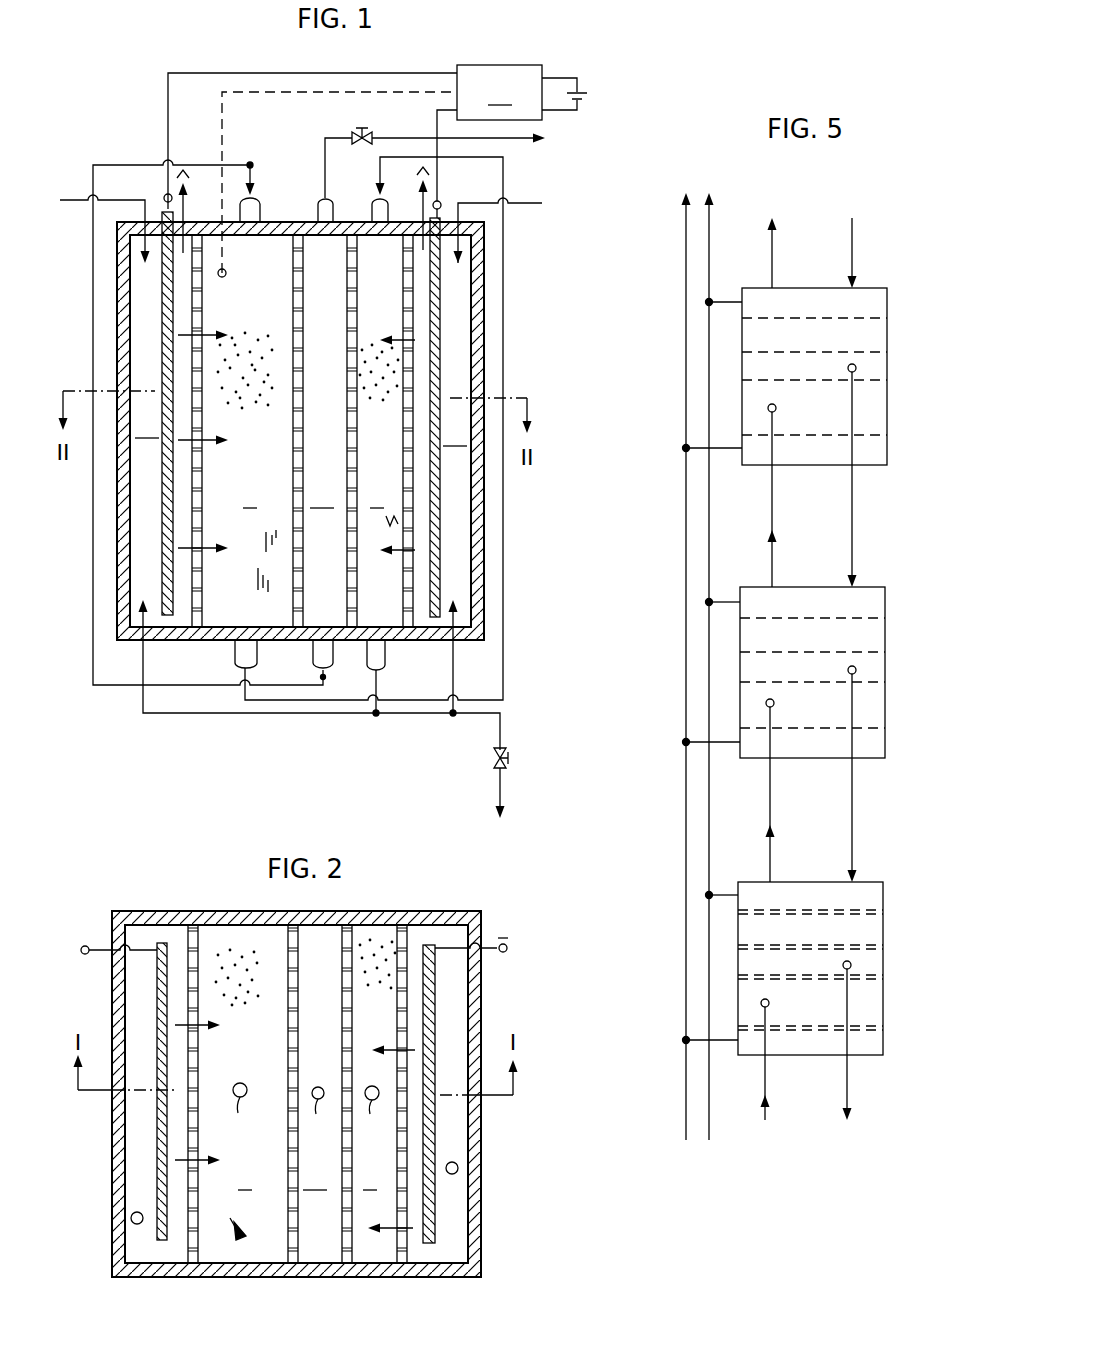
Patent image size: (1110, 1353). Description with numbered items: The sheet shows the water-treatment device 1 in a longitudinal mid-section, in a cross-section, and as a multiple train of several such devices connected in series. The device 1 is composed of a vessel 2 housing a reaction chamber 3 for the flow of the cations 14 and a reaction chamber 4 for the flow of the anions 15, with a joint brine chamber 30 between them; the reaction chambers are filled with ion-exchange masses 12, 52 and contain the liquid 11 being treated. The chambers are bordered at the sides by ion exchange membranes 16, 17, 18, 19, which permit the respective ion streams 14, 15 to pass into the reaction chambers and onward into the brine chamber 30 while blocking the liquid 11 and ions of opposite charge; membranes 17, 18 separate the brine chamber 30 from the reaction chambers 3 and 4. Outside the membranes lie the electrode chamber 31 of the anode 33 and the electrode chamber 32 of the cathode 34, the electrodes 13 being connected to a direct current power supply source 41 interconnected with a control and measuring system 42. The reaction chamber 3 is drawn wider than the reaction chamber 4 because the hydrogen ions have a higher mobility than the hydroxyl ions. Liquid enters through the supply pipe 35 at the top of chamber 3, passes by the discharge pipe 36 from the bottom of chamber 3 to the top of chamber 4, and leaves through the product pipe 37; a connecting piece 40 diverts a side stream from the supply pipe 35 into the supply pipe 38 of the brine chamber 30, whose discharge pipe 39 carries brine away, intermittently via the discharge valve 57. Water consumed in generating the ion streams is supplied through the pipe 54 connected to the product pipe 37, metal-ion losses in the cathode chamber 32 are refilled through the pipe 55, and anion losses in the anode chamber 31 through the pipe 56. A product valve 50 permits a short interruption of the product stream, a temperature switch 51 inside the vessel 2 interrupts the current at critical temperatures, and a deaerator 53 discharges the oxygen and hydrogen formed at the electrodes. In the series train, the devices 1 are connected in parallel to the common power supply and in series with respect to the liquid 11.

In FIG. 1, the device 1 is at (125, 660).
In FIG. 2, the device 1 is at (105, 1182).
In FIG. 5, the device 1 is at (818, 470).
In FIG. 1, the vessel 2 is at (475, 565).
In FIG. 2, the vessel 2 is at (240, 910).
In FIG. 5, the vessel 2 is at (862, 466).
In FIG. 1, the reaction chamber 3 is at (250, 495).
In FIG. 2, the reaction chamber 3 is at (245, 1177).
In FIG. 1, the reaction chamber 4 is at (377, 495).
In FIG. 2, the reaction chamber 4 is at (370, 1177).
In FIG. 1, the liquid 11 is at (255, 580).
In FIG. 2, the liquid 11 is at (242, 1228).
In FIG. 1, the ion-exchange mass 12 is at (262, 385).
In FIG. 2, the ion-exchange mass 12 is at (240, 985).
In FIG. 1, the electrodes 13 is at (168, 128).
In FIG. 2, the electrodes 13 is at (74, 948).
In FIG. 5, the electrodes 13 is at (710, 582).
In FIG. 1, the cations 14 is at (222, 335).
In FIG. 2, the cations 14 is at (222, 1028).
In FIG. 1, the anions 15 is at (385, 340).
In FIG. 2, the anions 15 is at (380, 1050).
In FIG. 1, the ion exchange membrane 16 is at (202, 518).
In FIG. 2, the ion exchange membrane 16 is at (185, 1243).
In FIG. 1, the ion exchange membrane 17 is at (303, 300).
In FIG. 2, the ion exchange membrane 17 is at (287, 1243).
In FIG. 1, the ion exchange membrane 18 is at (347, 393).
In FIG. 2, the ion exchange membrane 18 is at (342, 1243).
In FIG. 1, the ion exchange membrane 19 is at (403, 568).
In FIG. 2, the ion exchange membrane 19 is at (400, 1243).
In FIG. 1, the brine chamber 30 is at (322, 495).
In FIG. 2, the brine chamber 30 is at (315, 1177).
In FIG. 1, the electrode chamber 31 is at (147, 425).
In FIG. 2, the electrode chamber 31 is at (135, 1143).
In FIG. 1, the electrode chamber 32 is at (455, 433).
In FIG. 2, the electrode chamber 32 is at (458, 1012).
In FIG. 1, the anode 33 is at (160, 326).
In FIG. 2, the anode 33 is at (157, 997).
In FIG. 1, the cathode 34 is at (435, 355).
In FIG. 2, the cathode 34 is at (430, 988).
In FIG. 1, the supply pipe 35 is at (255, 205).
In FIG. 2, the supply pipe 35 is at (251, 1110).
In FIG. 1, the discharge pipe 36 is at (235, 655).
In FIG. 5, the discharge pipe 36 is at (775, 272).
In FIG. 1, the product pipe 37 is at (387, 660).
In FIG. 2, the product pipe 37 is at (372, 1114).
In FIG. 1, the supply pipe 38 is at (313, 655).
In FIG. 1, the discharge pipe 39 is at (328, 203).
In FIG. 2, the discharge pipe 39 is at (318, 1115).
In FIG. 5, the discharge pipe 39 is at (856, 255).
In FIG. 1, the connecting piece 40 is at (252, 158).
In FIG. 1, the direct current power supply source 41 is at (582, 105).
In FIG. 1, the control and measuring system 42 is at (499, 92).
In FIG. 1, the product valve 50 is at (495, 755).
In FIG. 1, the temperature switch 51 is at (226, 276).
In FIG. 1, the ion-exchange mass 52 is at (380, 392).
In FIG. 2, the ion-exchange mass 52 is at (380, 975).
In FIG. 1, the deaerator 53 is at (185, 185).
In FIG. 1, the pipe 54 is at (180, 715).
In FIG. 2, the pipe 54 is at (131, 1220).
In FIG. 1, the pipe 55 is at (527, 204).
In FIG. 1, the pipe 56 is at (68, 205).
In FIG. 1, the discharge valve 57 is at (357, 132).